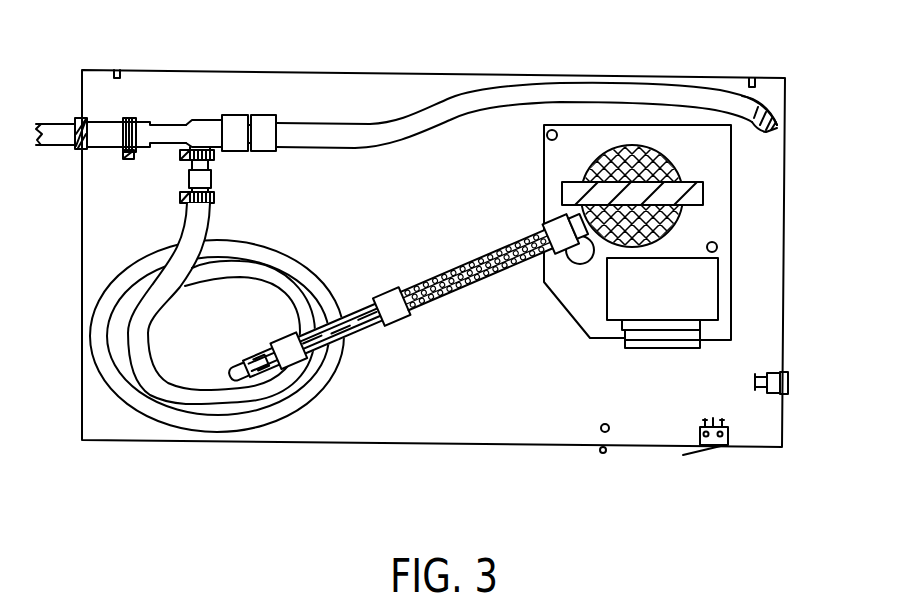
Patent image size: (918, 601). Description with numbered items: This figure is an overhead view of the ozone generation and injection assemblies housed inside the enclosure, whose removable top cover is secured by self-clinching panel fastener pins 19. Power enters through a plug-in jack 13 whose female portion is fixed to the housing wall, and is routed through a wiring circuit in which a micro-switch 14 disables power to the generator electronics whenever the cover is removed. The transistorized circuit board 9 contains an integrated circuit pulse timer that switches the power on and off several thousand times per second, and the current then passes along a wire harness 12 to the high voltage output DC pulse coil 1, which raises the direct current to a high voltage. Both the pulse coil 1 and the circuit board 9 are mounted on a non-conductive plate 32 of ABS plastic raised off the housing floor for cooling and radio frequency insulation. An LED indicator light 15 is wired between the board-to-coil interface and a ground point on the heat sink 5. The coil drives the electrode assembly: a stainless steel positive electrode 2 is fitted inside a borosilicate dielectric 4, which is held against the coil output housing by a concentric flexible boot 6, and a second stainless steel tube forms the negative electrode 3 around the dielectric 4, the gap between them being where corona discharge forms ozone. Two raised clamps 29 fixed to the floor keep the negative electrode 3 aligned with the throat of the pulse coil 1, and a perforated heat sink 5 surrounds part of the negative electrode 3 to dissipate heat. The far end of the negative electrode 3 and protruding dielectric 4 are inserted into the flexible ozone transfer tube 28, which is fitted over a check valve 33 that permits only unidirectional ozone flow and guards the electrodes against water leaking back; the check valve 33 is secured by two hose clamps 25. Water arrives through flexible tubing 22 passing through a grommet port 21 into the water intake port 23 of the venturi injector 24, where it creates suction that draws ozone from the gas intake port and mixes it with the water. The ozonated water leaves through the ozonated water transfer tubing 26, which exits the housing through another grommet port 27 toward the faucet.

The pulse coil 1 is at (586, 166).
The positive electrode 2 is at (273, 373).
The negative electrode 3 is at (322, 368).
The dielectric 4 is at (233, 385).
The heat sink 5 is at (457, 270).
The flexible boot 6 is at (548, 226).
The transistorized circuit board 9 is at (720, 276).
The wire harness 12 is at (640, 349).
The plug-in jack 13 is at (788, 375).
The micro-switch 14 is at (727, 447).
The LED indicator light 15 is at (602, 455).
The self-clinching panel fastener pin 19 is at (117, 72).
The grommet port 21 is at (783, 111).
The flexible tubing 22 is at (670, 82).
The water intake port 23 is at (258, 116).
The venturi injector 24 is at (213, 116).
The hose clamps 25 is at (129, 158).
The ozonated water transfer tubing 26 is at (111, 128).
The grommet port 27 is at (80, 118).
The ozone transfer tube 28 is at (133, 420).
The raised clamps 29 is at (387, 297).
The non-conductive plate 32 is at (735, 206).
The check valve 33 is at (212, 176).